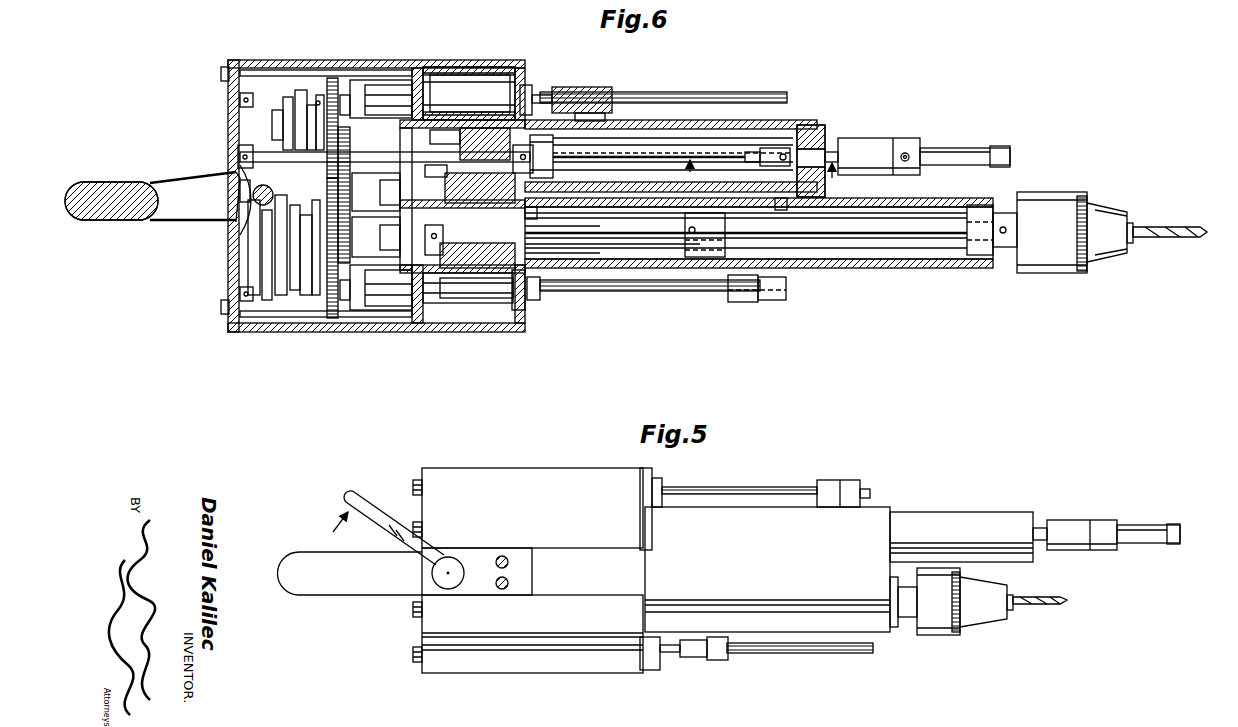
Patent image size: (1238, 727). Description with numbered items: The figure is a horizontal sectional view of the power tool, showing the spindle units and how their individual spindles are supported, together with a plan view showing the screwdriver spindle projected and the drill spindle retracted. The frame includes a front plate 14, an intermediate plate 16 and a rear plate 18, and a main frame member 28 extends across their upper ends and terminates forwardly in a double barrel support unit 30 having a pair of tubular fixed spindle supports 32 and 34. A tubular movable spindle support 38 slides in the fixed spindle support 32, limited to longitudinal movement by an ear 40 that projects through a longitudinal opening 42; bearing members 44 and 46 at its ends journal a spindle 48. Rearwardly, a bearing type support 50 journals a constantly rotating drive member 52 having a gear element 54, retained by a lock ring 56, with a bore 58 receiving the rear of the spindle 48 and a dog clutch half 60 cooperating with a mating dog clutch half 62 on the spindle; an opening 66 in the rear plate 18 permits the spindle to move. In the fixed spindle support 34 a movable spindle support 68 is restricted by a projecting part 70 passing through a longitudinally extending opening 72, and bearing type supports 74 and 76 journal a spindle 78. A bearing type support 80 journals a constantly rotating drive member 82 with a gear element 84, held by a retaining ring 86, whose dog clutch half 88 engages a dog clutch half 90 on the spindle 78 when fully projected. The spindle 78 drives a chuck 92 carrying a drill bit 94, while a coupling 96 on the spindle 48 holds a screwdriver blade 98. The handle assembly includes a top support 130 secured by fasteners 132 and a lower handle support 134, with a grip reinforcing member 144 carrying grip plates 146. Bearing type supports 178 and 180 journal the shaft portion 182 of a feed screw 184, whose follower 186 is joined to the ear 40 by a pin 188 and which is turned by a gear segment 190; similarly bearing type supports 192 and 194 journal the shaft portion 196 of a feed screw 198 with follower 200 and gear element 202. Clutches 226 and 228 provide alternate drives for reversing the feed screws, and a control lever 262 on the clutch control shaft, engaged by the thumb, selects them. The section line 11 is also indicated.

In FIG. 6, the section line 11 is at (765, 178).
In FIG. 6, the front plate 14 is at (526, 306).
In FIG. 6, the intermediate plate 16 is at (424, 302).
In FIG. 6, the rear plate 18 is at (232, 265).
In FIG. 5, the main frame member 28 is at (594, 555).
In FIG. 5, the double barrel support unit 30 is at (878, 505).
In FIG. 6, the fixed spindle support 32 is at (805, 122).
In FIG. 6, the fixed spindle support 34 is at (818, 268).
In FIG. 6, the movable spindle support 38 is at (826, 128).
In FIG. 5, the movable spindle support 38 is at (955, 512).
In FIG. 6, the ear 40 is at (572, 158).
In FIG. 6, the longitudinal opening 42 is at (758, 120).
In FIG. 6, the bearing member 44 is at (830, 143).
In FIG. 6, the bearing member 46 is at (558, 178).
In FIG. 6, the spindle 48 is at (632, 160).
In FIG. 6, the bearing type support 50 is at (473, 136).
In FIG. 6, the constantly rotating drive member 52 is at (480, 188).
In FIG. 6, the gear element 54 is at (453, 126).
In FIG. 6, the lock ring 56 is at (562, 213).
In FIG. 6, the bore 58 is at (470, 142).
In FIG. 6, the dog clutch half 60 is at (447, 176).
In FIG. 6, the dog clutch half 62 is at (239, 153).
In FIG. 6, the opening 66 is at (238, 176).
In FIG. 6, the movable spindle support 68 is at (915, 268).
In FIG. 5, the movable spindle support 68 is at (895, 628).
In FIG. 6, the projecting part 70 is at (782, 210).
In FIG. 6, the longitudinally extending opening 72 is at (645, 267).
In FIG. 6, the bearing type support 74 is at (726, 240).
In FIG. 6, the bearing type support 76 is at (978, 205).
In FIG. 6, the spindle 78 is at (889, 230).
In FIG. 6, the bearing type support 80 is at (556, 260).
In FIG. 6, the constantly rotating drive member 82 is at (520, 212).
In FIG. 6, the gear element 84 is at (467, 262).
In FIG. 6, the retaining ring 86 is at (520, 258).
In FIG. 6, the dog clutch half 88 is at (427, 236).
In FIG. 6, the dog clutch half 90 is at (379, 230).
In FIG. 6, the chuck 92 is at (1057, 274).
In FIG. 5, the chuck 92 is at (952, 636).
In FIG. 6, the drill bit 94 is at (1152, 239).
In FIG. 5, the drill bit 94 is at (1040, 606).
In FIG. 6, the coupling 96 is at (888, 143).
In FIG. 5, the coupling 96 is at (1070, 520).
In FIG. 6, the screwdriver blade 98 is at (963, 148).
In FIG. 5, the screwdriver blade 98 is at (1139, 525).
In FIG. 5, the top support 130 is at (366, 586).
In FIG. 5, the fasteners 132 is at (504, 556).
In FIG. 6, the lower handle support 134 is at (183, 219).
In FIG. 6, the grip reinforcing member 144 is at (122, 186).
In FIG. 6, the grip plates 146 is at (82, 185).
In FIG. 6, the bearing type support 178 is at (383, 88).
In FIG. 6, the bearing type support 180 is at (533, 82).
In FIG. 6, the shaft portion 182 is at (470, 92).
In FIG. 6, the feed screw 184 is at (644, 91).
In FIG. 5, the feed screw 184 is at (765, 486).
In FIG. 6, the follower 186 is at (600, 87).
In FIG. 5, the follower 186 is at (850, 480).
In FIG. 6, the pin 188 is at (598, 122).
In FIG. 6, the gear segment 190 is at (333, 77).
In FIG. 6, the bearing type support 192 is at (380, 311).
In FIG. 6, the bearing type support 194 is at (545, 300).
In FIG. 6, the shaft portion 196 is at (489, 297).
In FIG. 6, the feed screw 198 is at (632, 292).
In FIG. 5, the feed screw 198 is at (805, 654).
In FIG. 6, the follower 200 is at (748, 303).
In FIG. 5, the follower 200 is at (719, 661).
In FIG. 6, the gear element 202 is at (333, 318).
In FIG. 6, the clutch 226 is at (298, 100).
In FIG. 6, the clutch 228 is at (291, 300).
In FIG. 5, the control lever 262 is at (363, 492).